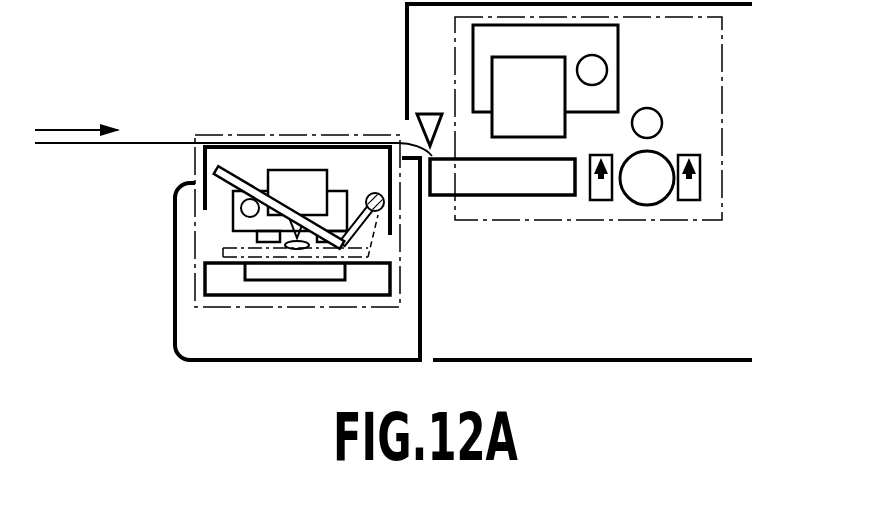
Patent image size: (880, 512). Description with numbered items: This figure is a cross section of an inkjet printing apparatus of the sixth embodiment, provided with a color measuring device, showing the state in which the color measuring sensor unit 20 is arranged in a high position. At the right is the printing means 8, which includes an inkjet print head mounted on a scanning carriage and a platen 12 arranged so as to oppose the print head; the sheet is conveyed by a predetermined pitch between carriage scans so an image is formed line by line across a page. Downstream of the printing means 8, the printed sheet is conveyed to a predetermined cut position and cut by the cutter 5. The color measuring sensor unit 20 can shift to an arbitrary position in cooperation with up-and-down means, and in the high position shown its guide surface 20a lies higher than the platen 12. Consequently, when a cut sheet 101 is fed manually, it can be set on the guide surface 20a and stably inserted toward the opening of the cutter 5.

The cut sheet 101 is at (155, 143).
The color measuring sensor unit 20 is at (203, 172).
The guide surface 20a is at (243, 146).
The cutter 5 is at (430, 113).
The printing means 8 is at (487, 222).
The platen 12 is at (541, 180).